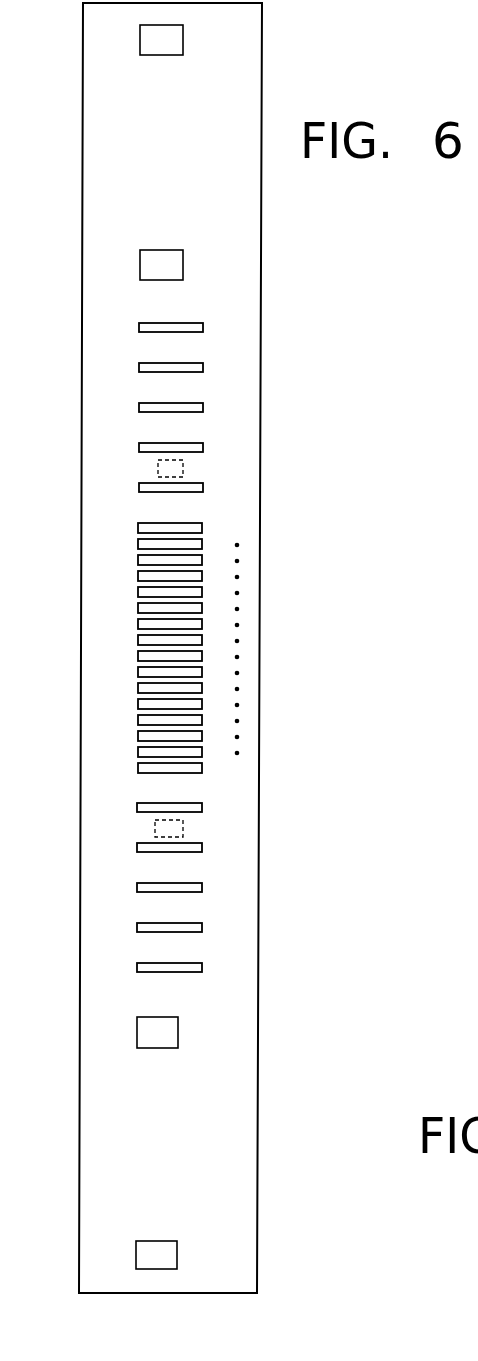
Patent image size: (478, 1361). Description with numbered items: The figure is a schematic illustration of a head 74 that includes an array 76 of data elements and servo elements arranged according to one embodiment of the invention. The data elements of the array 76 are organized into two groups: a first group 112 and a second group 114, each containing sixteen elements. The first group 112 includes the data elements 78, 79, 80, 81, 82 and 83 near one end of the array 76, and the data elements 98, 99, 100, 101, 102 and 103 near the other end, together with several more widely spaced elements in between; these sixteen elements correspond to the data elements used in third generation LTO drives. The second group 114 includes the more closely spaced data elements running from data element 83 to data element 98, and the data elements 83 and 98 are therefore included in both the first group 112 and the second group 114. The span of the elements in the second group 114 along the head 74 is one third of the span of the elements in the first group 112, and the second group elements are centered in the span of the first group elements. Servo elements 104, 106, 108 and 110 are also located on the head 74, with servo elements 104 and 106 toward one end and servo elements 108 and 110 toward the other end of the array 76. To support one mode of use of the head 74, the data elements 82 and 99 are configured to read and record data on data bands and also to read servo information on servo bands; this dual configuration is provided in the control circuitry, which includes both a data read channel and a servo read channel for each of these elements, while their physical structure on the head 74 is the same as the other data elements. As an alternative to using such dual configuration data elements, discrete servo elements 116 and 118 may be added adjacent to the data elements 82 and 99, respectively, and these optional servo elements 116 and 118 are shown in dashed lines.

The head 74 is at (247, 1206).
The array 76 is at (137, 311).
The data element 78 is at (198, 330).
The data element 79 is at (198, 370).
The data element 80 is at (198, 410).
The data element 81 is at (198, 450).
The data element 82 is at (198, 490).
The data element 83 is at (190, 527).
The data element 98 is at (188, 773).
The data element 99 is at (198, 810).
The data element 100 is at (198, 850).
The data element 101 is at (198, 890).
The data element 102 is at (198, 930).
The data element 103 is at (198, 970).
The servo element 104 is at (177, 43).
The servo element 106 is at (177, 268).
The servo element 108 is at (173, 1034).
The servo element 110 is at (172, 1257).
The first group 112 is at (130, 324).
The second group 114 is at (210, 525).
The discrete servo element 116 is at (157, 471).
The discrete servo element 118 is at (155, 830).